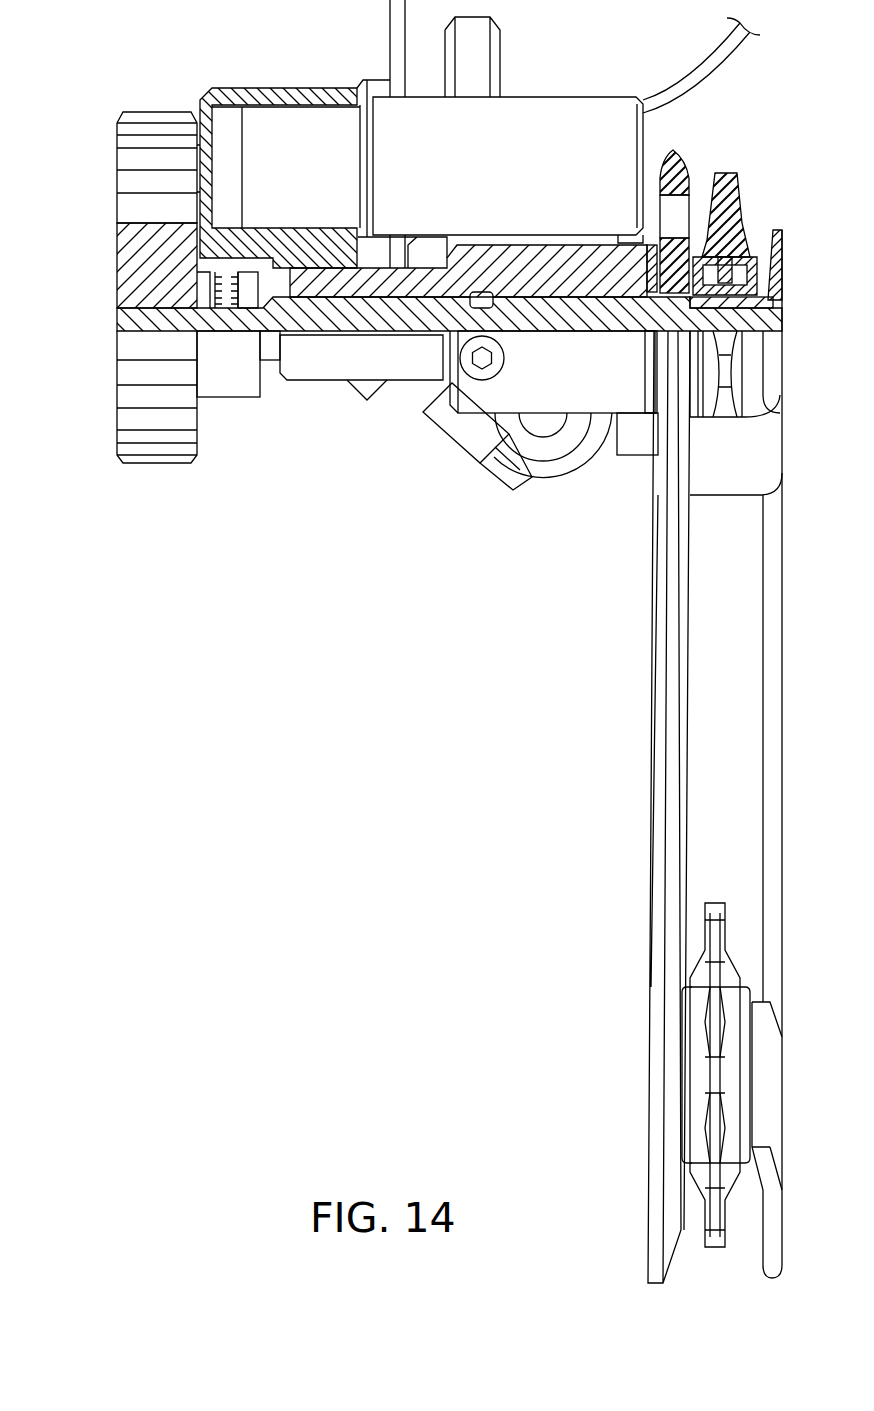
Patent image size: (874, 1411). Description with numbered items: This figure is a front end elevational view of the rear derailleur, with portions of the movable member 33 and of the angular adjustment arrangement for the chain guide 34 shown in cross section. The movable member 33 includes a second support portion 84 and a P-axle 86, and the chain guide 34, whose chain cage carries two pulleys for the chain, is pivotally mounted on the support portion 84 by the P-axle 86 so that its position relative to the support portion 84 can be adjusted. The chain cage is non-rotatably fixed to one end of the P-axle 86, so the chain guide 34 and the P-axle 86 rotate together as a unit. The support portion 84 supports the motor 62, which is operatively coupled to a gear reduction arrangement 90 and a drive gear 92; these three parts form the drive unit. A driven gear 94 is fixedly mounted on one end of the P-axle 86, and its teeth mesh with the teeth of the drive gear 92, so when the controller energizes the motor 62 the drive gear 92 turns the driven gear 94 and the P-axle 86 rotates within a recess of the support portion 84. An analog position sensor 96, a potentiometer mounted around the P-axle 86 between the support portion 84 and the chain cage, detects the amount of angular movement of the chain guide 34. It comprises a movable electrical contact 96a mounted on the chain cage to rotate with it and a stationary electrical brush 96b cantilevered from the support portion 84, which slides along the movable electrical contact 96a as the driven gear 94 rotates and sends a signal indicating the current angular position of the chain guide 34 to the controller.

The movable member 33 is at (311, 84).
The chain guide 34 is at (653, 765).
The motor 62 is at (560, 97).
The second support portion 84 is at (477, 398).
The P-axle 86 is at (330, 312).
The gear reduction arrangement 90 is at (272, 130).
The drive gear 92 is at (117, 172).
The driven gear 94 is at (130, 395).
The analog position sensor 96 is at (652, 226).
The movable electrical contact 96a is at (690, 247).
The stationary electrical brush 96b is at (647, 332).